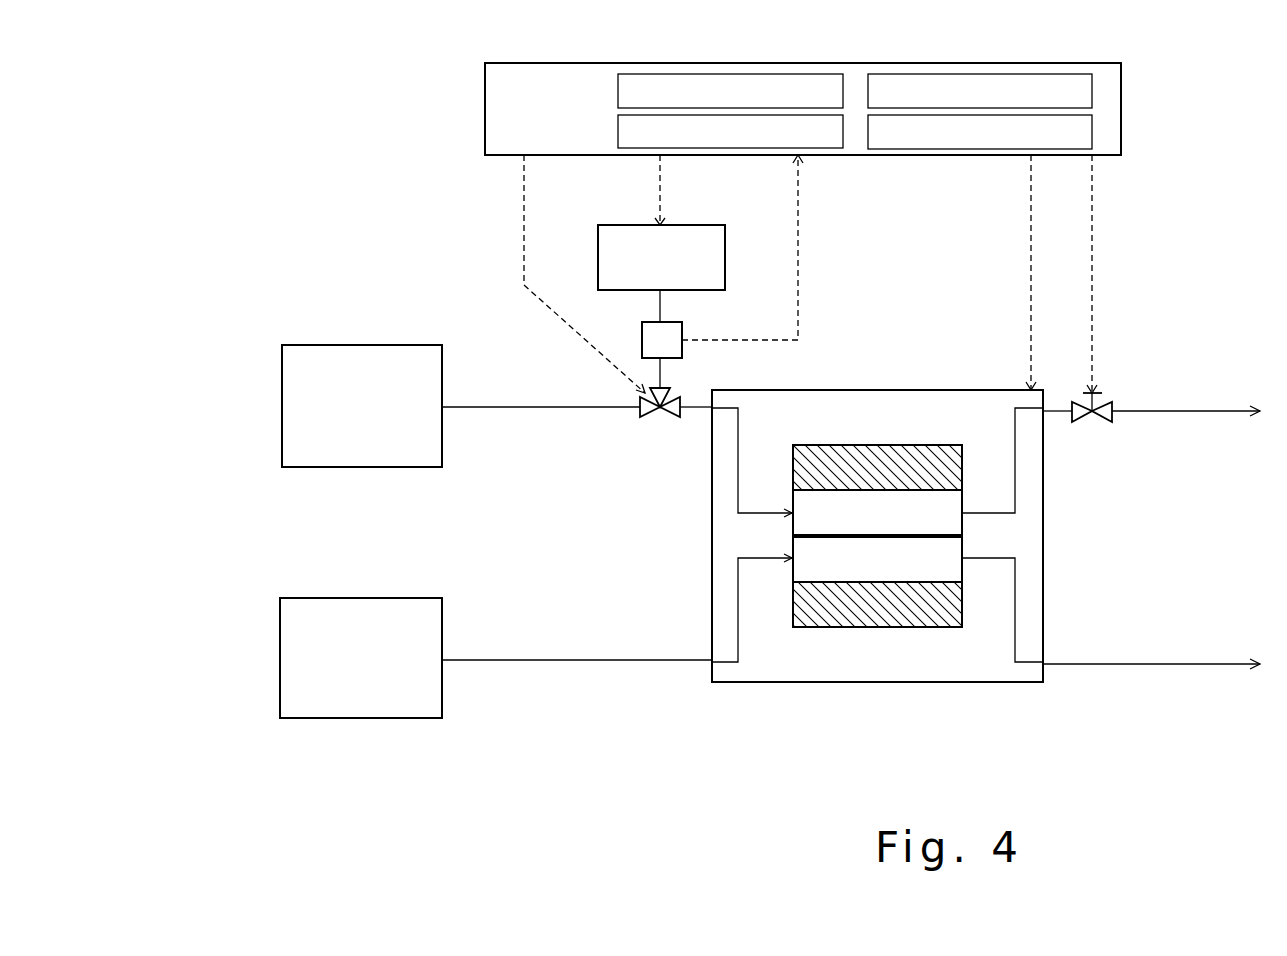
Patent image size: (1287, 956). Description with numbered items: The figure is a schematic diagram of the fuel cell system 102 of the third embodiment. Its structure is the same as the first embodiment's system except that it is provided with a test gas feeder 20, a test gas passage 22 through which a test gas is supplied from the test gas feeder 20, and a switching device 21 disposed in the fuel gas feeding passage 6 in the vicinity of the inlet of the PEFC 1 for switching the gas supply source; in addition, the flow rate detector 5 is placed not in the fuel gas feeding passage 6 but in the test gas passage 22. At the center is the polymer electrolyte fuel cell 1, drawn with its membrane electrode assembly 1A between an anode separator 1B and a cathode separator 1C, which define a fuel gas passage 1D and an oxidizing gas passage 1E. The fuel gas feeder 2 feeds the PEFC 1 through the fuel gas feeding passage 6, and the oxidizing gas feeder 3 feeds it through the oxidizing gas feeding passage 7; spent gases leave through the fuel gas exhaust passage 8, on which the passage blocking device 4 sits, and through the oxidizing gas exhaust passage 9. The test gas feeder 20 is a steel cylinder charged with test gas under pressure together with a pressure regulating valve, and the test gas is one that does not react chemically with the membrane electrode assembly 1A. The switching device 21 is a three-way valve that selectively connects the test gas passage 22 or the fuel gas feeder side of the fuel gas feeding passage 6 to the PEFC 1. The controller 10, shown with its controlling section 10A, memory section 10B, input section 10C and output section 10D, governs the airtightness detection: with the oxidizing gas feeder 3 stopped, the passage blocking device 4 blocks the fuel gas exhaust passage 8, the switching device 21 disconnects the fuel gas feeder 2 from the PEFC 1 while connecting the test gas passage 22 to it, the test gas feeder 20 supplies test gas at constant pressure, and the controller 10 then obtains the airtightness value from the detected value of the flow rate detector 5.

The fuel cell system 102 is at (320, 162).
The controller 10 is at (485, 80).
The controlling section 10A is at (727, 148).
The memory section 10B is at (727, 74).
The input section 10C is at (973, 149).
The output section 10D is at (973, 74).
The test gas feeder 20 is at (725, 272).
The flow rate detector 5 is at (683, 332).
The test gas passage 22 is at (667, 390).
The switching device 21 is at (655, 420).
The fuel gas feeder 2 is at (282, 385).
The fuel gas feeding passage 6 is at (482, 404).
The oxidizing gas feeder 3 is at (280, 683).
The oxidizing gas feeding passage 7 is at (481, 663).
The polymer electrolyte fuel cell (PEFC) 1 is at (990, 390).
The membrane electrode assembly 1A is at (925, 540).
The anode separator 1B is at (838, 505).
The cathode separator 1C is at (885, 605).
The fuel gas passage 1D is at (929, 470).
The oxidizing gas passage 1E is at (838, 567).
The passage blocking device 4 is at (1102, 400).
The fuel gas exhaust passage 8 is at (1211, 409).
The oxidizing gas exhaust passage 9 is at (1211, 666).